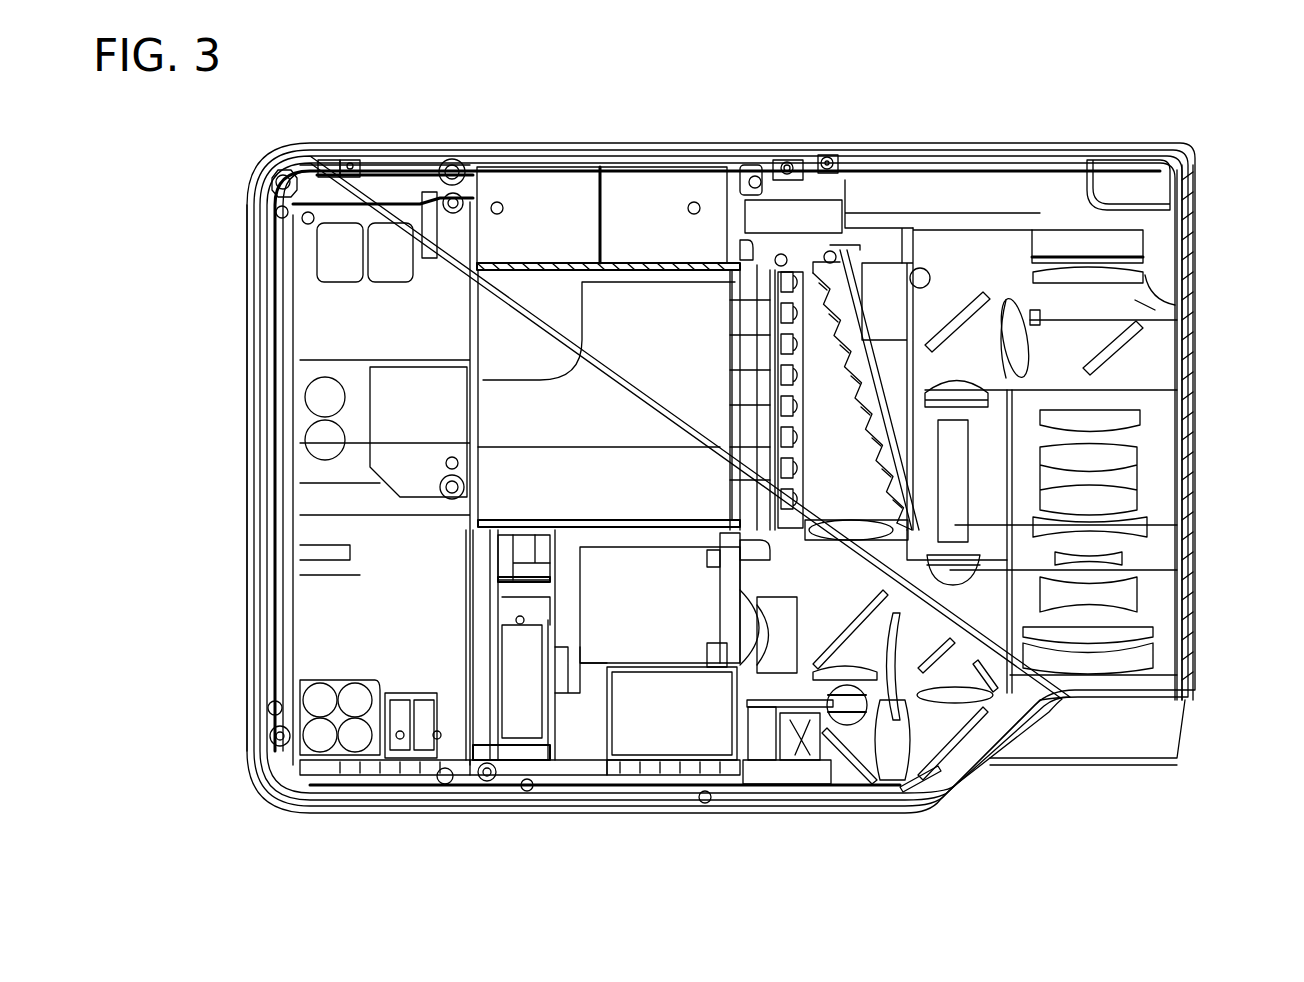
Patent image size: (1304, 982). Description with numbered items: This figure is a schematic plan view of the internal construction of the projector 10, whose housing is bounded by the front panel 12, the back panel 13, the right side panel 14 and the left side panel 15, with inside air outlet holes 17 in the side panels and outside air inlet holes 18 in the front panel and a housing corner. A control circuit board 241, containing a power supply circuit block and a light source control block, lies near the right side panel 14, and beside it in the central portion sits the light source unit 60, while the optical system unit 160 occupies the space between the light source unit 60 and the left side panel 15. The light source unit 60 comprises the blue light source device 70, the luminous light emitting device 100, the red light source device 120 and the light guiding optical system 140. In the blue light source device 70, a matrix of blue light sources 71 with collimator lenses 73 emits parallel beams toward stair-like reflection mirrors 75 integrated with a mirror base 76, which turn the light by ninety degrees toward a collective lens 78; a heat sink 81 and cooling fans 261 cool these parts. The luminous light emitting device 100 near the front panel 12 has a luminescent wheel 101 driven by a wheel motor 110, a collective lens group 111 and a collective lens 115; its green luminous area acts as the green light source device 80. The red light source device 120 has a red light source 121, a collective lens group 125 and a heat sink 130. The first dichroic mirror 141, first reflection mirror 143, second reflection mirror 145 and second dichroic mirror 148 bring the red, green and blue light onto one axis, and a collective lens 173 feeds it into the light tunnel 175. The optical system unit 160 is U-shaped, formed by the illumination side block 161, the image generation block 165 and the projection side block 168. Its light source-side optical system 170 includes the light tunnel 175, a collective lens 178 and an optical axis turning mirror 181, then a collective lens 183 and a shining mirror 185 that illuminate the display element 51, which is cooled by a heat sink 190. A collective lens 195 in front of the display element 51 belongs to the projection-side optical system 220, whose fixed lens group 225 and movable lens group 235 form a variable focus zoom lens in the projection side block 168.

The projector 10 is at (1204, 136).
The front panel 12 is at (408, 812).
The back panel 13 is at (592, 156).
The right side panel 14 is at (250, 342).
The left side panel 15 is at (1197, 640).
The inside air outlet holes 17 is at (258, 382).
The outside air inlet holes 18 is at (550, 142).
The display element 51 is at (1130, 252).
The light source unit 60 is at (722, 447).
The blue light source device 70 is at (781, 85).
The blue light sources 71 is at (800, 380).
The collimator lenses 73 is at (785, 330).
The reflection mirrors 75 is at (837, 408).
The mirror base 76 is at (862, 222).
The collective lens 78 is at (835, 525).
The green light source device 80 is at (813, 881).
The heat sink 81 is at (637, 360).
The luminous light emitting device 100 is at (800, 762).
The luminescent wheel 101 is at (762, 790).
The wheel motor 110 is at (812, 745).
The collective lens group 111 is at (923, 753).
The collective lens 115 is at (893, 762).
The red light source device 120 is at (648, 718).
The red light source 121 is at (727, 637).
The collective lens group 125 is at (735, 615).
The heat sink 130 is at (615, 612).
The light guiding optical system 140 is at (1000, 700).
The first dichroic mirror 141 is at (845, 635).
The first reflection mirror 143 is at (850, 728).
The second reflection mirror 145 is at (965, 715).
The second dichroic mirror 148 is at (952, 638).
The optical system unit 160 is at (1065, 672).
The illumination side block 161 is at (982, 370).
The image generation block 165 is at (1135, 305).
The projection side block 168 is at (1145, 465).
The light source-side optical system 170 is at (970, 292).
The collective lens 173 is at (980, 570).
The light tunnel 175 is at (968, 525).
The collective lens 178 is at (990, 390).
The optical axis turning mirror 181 is at (958, 322).
The collective lens 183 is at (1040, 318).
The shining mirror 185 is at (1120, 350).
The heat sink 190 is at (1053, 187).
The collective lens 195 is at (1140, 285).
The projection-side optical system 220 is at (1145, 495).
The fixed lens group 225 is at (1180, 760).
The movable lens group 235 is at (1145, 440).
The control circuit board 241 is at (275, 542).
The cooling fan 261 is at (497, 203).